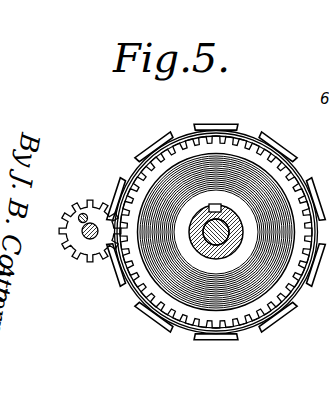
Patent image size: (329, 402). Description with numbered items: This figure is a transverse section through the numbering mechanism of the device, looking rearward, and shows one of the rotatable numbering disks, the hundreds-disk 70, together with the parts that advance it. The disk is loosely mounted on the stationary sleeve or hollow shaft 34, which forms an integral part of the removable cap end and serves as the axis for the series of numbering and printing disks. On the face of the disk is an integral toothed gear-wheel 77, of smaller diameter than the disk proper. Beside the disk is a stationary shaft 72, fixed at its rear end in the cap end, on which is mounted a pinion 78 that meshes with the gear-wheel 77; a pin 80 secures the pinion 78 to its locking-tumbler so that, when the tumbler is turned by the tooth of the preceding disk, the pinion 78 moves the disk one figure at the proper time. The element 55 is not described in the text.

The hundreds-disk 70 is at (186, 336).
The stationary shaft 72 is at (100, 232).
The toothed gear-wheel 77 is at (276, 326).
The pinion 78 is at (107, 208).
The pin 80 is at (78, 217).
The key 55 is at (221, 208).
The stationary sleeve or hollow shaft 34 is at (243, 236).